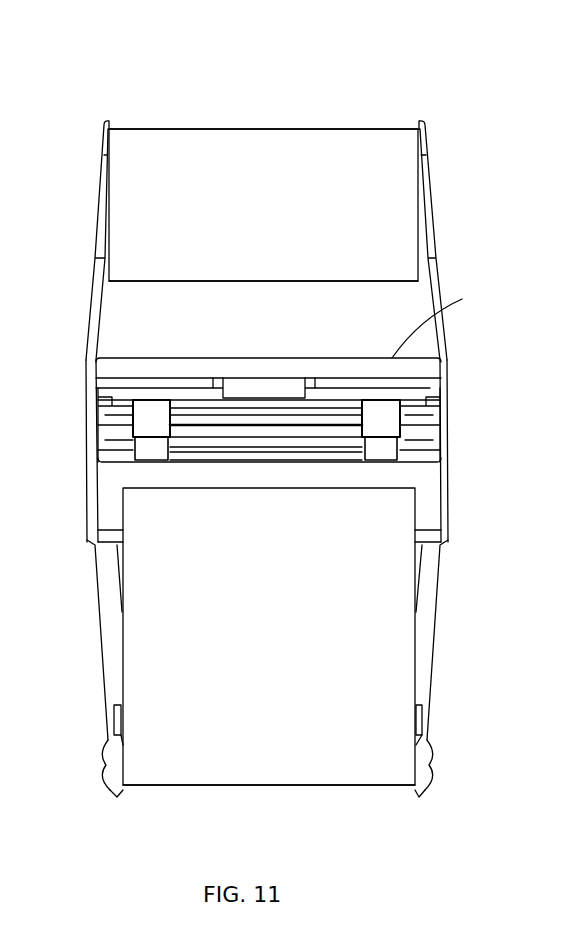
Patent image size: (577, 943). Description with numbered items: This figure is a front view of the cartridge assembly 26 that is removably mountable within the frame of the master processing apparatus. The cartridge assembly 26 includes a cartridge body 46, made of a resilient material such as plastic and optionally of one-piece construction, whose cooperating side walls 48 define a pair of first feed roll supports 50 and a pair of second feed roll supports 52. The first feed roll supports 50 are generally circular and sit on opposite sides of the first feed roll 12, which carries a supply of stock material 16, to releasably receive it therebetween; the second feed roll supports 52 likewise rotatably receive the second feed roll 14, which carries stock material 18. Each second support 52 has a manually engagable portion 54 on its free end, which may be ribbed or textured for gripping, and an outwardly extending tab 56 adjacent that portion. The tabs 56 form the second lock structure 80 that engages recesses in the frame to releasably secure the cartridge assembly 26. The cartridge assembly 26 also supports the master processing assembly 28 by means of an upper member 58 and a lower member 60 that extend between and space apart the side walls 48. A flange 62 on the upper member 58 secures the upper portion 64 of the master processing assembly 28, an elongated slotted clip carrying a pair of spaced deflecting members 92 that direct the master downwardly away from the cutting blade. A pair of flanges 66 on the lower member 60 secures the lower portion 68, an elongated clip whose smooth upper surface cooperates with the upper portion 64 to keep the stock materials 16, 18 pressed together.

The feed roll 12 is at (367, 138).
The feed roll 14 is at (392, 755).
The stock material 16 is at (288, 165).
The stock material 18 is at (335, 757).
The cartridge assembly 26 is at (463, 134).
The master processing assembly 28 is at (410, 431).
The cartridge body 46 is at (443, 351).
The side walls 48 is at (102, 396).
The first feed roll supports 50 is at (99, 200).
The second feed roll supports 52 is at (104, 648).
The manually engagable portion 54 is at (110, 792).
The tab 56 is at (104, 775).
The upper member 58 is at (436, 315).
The lower member 60 is at (332, 452).
The flange 62 is at (251, 386).
The upper portion 64 is at (106, 380).
The flanges 66 is at (143, 456).
The lower portion 68 is at (285, 440).
The second lock structure 80 is at (100, 783).
The deflecting members 92 is at (140, 418).